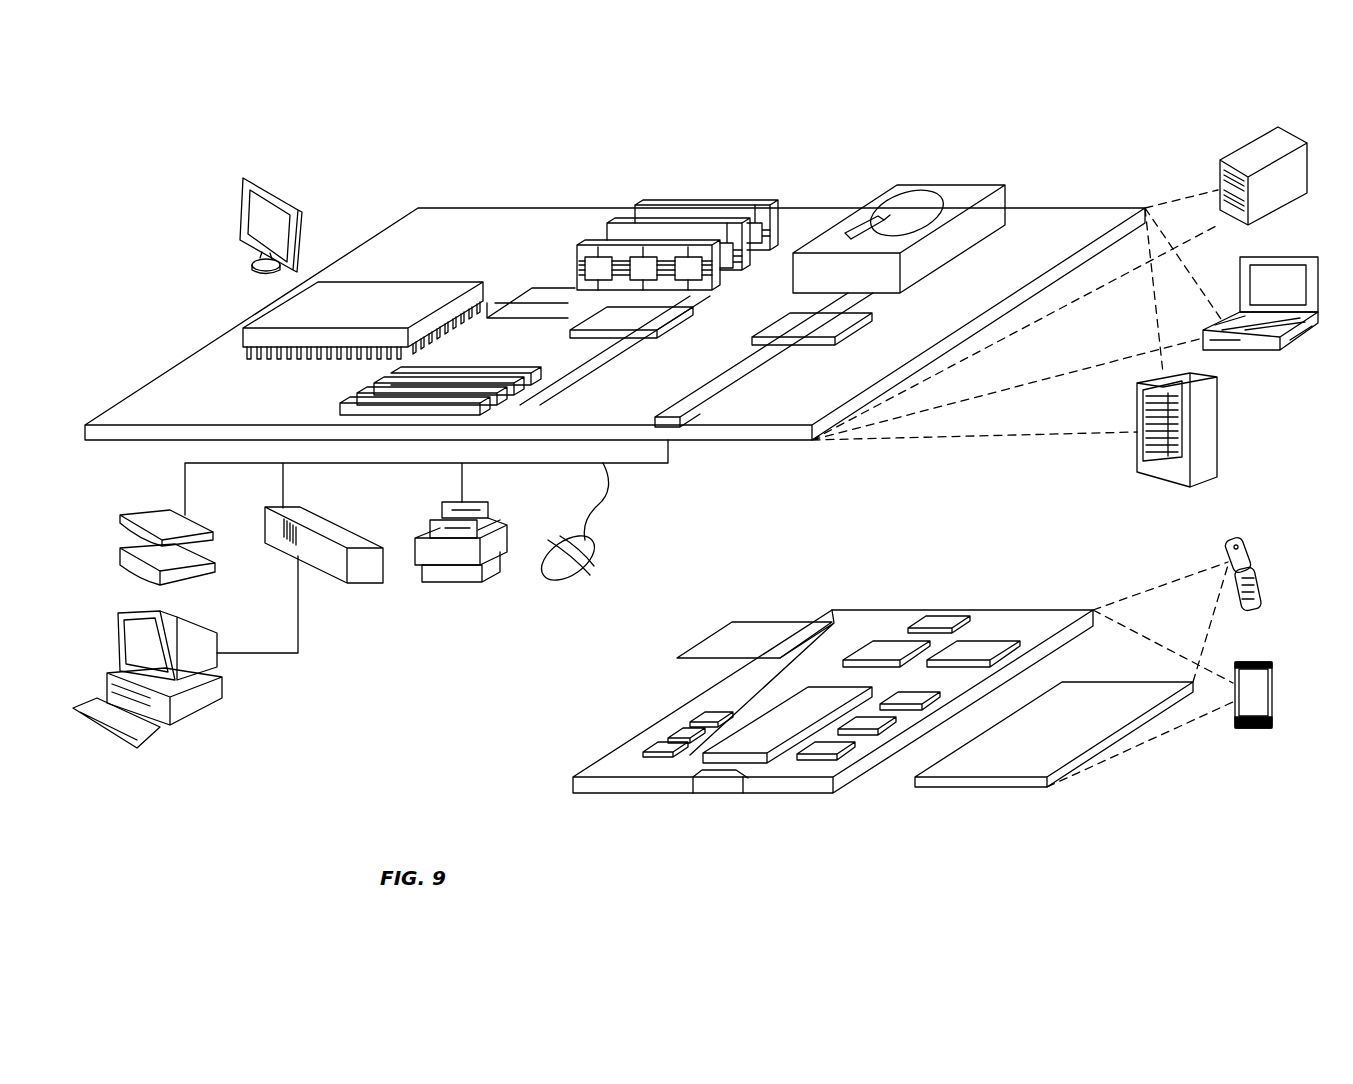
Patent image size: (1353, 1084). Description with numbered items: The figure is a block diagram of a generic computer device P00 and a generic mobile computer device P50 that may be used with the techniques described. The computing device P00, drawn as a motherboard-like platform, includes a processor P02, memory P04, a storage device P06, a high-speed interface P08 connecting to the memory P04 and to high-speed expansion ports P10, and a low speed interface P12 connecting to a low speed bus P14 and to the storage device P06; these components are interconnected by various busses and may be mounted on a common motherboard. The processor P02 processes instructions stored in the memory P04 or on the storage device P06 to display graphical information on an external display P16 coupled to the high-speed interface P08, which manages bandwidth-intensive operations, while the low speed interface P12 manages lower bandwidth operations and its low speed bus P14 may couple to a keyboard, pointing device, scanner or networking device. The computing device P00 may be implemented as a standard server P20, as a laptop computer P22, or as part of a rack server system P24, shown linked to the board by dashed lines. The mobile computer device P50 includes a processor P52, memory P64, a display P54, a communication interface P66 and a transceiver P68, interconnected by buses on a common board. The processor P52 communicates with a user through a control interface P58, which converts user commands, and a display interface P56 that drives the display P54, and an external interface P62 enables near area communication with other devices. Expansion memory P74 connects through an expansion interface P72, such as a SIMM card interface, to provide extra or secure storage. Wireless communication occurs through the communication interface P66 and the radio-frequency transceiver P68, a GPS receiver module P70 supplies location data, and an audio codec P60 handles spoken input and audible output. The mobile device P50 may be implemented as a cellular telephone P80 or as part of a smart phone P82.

The computing device P00 is at (371, 155).
The processor P02 is at (266, 310).
The memory P04 is at (710, 203).
The storage device P06 is at (941, 186).
The high-speed interface P08 is at (645, 318).
The high-speed expansion ports P10 is at (366, 389).
The low speed interface P12 is at (782, 321).
The low speed bus P14 is at (668, 416).
The display P16 is at (243, 178).
The standard server P20 is at (1239, 157).
The laptop computer P22 is at (1294, 256).
The rack server system P24 is at (1218, 430).
The mobile computer device P50 is at (1114, 797).
The processor P52 is at (757, 742).
The display P54 is at (1092, 698).
The display interface P56 is at (832, 752).
The control interface P58 is at (872, 727).
The audio codec P60 is at (912, 698).
The external interface P62 is at (718, 780).
The memory P64 is at (670, 745).
The communication interface P66 is at (886, 641).
The transceiver P68 is at (980, 641).
The GPS receiver module P70 is at (940, 620).
The expansion interface P72 is at (814, 623).
The expansion memory P74 is at (731, 623).
The cellular telephone P80 is at (1234, 538).
The smart phone P82 is at (1244, 668).